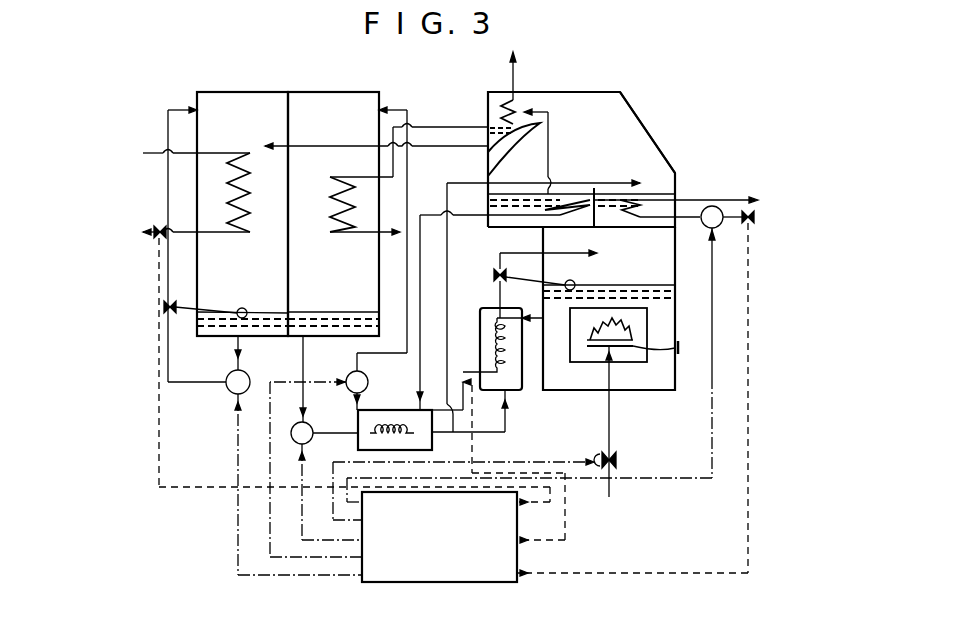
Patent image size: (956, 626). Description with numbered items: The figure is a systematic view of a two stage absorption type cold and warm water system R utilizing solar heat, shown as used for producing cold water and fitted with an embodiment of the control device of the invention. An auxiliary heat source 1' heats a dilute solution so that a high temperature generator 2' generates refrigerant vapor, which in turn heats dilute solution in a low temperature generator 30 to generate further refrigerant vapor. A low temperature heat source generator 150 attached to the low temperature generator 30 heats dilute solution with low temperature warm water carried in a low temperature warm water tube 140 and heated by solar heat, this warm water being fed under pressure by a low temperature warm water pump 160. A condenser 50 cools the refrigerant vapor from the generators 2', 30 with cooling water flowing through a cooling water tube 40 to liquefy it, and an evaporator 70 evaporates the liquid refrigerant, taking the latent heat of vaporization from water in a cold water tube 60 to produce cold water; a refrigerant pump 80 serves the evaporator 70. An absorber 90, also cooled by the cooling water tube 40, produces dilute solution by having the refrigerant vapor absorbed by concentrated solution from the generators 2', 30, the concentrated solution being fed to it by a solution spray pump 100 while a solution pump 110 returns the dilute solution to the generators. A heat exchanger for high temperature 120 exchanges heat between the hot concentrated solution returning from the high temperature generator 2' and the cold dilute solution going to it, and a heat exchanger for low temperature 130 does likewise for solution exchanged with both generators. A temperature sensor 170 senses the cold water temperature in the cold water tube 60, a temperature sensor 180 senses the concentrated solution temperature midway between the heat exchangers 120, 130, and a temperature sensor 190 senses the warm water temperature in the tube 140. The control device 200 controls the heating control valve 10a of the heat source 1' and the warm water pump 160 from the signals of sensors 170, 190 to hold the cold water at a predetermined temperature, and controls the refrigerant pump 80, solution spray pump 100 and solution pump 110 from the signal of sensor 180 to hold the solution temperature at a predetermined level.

The evaporator 70 is at (243, 102).
The absorber 90 is at (327, 102).
The cold water tube 60 is at (152, 152).
The temperature sensor 170 is at (154, 236).
The refrigerant pump 80 is at (227, 388).
The solution spray pump 100 is at (349, 376).
The solution pump 110 is at (326, 438).
The temperature sensor 180 is at (465, 385).
The heat exchanger for high temperature 120 is at (523, 392).
The heat exchanger for low temperature 130 is at (438, 443).
The heating control valve 10a is at (590, 455).
The control device 200 is at (518, 549).
The cooling water tube 40 is at (509, 74).
The condenser 50 is at (488, 104).
The cold and warm water system R is at (571, 88).
The low temperature heat source generator 150 is at (648, 140).
The low temperature warm water tube 140 is at (728, 199).
The low temperature warm water pump 160 is at (700, 200).
The temperature sensor 190 is at (753, 223).
The low temperature generator 30 is at (498, 231).
The high temperature generator 2' is at (594, 308).
The auxiliary heat source 1' is at (660, 340).